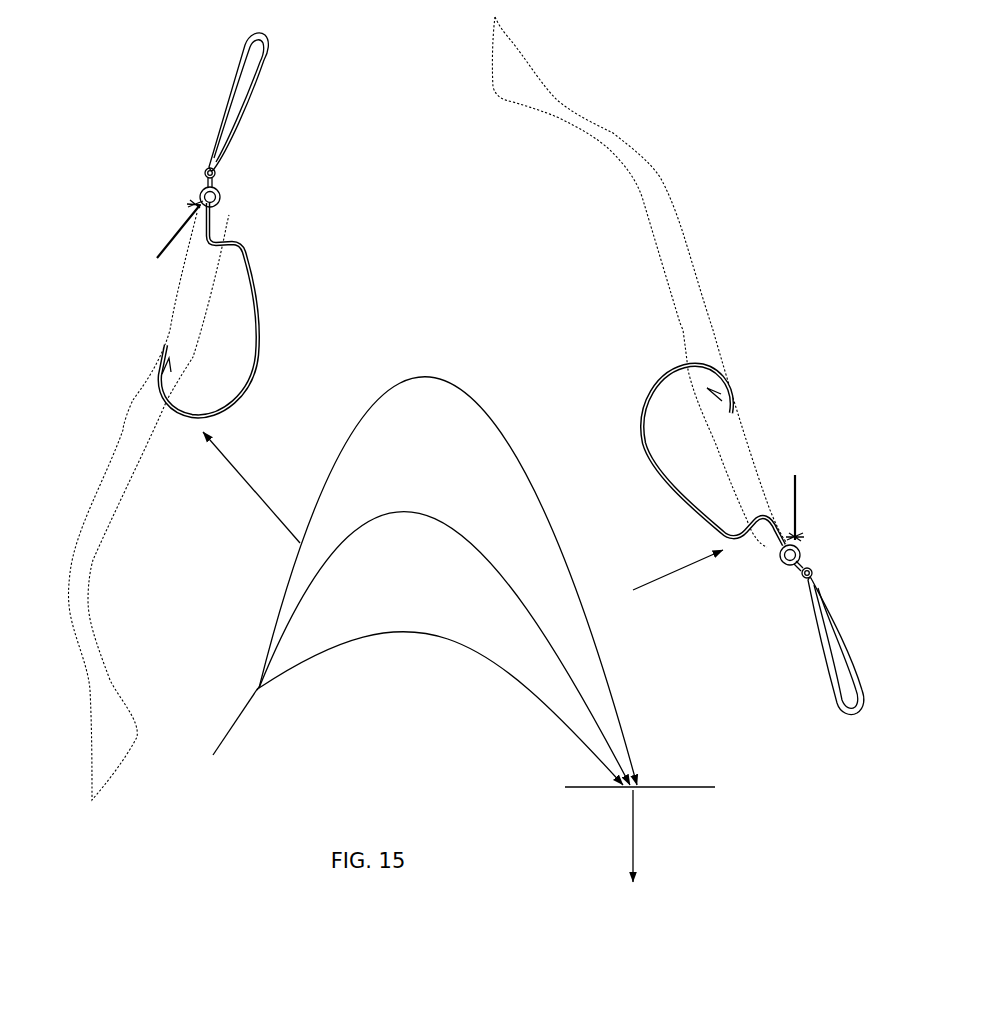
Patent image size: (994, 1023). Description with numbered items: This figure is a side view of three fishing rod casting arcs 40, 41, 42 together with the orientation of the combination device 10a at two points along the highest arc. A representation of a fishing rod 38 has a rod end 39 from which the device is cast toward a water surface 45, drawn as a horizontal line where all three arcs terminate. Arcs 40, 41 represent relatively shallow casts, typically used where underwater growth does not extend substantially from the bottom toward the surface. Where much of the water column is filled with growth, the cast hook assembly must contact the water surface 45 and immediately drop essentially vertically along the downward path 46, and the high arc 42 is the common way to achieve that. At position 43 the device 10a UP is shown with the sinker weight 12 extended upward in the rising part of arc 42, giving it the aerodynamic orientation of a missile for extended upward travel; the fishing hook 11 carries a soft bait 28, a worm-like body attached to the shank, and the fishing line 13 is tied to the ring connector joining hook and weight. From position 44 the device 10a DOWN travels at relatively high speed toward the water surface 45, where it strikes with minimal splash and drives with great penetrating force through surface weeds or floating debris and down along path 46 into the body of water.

The combination device 10a is at (273, 287).
The fishing hook 11 is at (260, 330).
The sinker weight 12 is at (237, 120).
The fishing line 13 is at (185, 222).
The soft bait 28 is at (137, 417).
The fishing rod 38 is at (235, 735).
The rod end 39 is at (260, 700).
The casting arc 40 is at (441, 708).
The casting arc 41 is at (444, 648).
The highest casting arc 42 is at (448, 581).
The position 43 is at (251, 487).
The position 44 is at (678, 580).
The water surface 45 is at (643, 785).
The downward path 46 is at (648, 836).